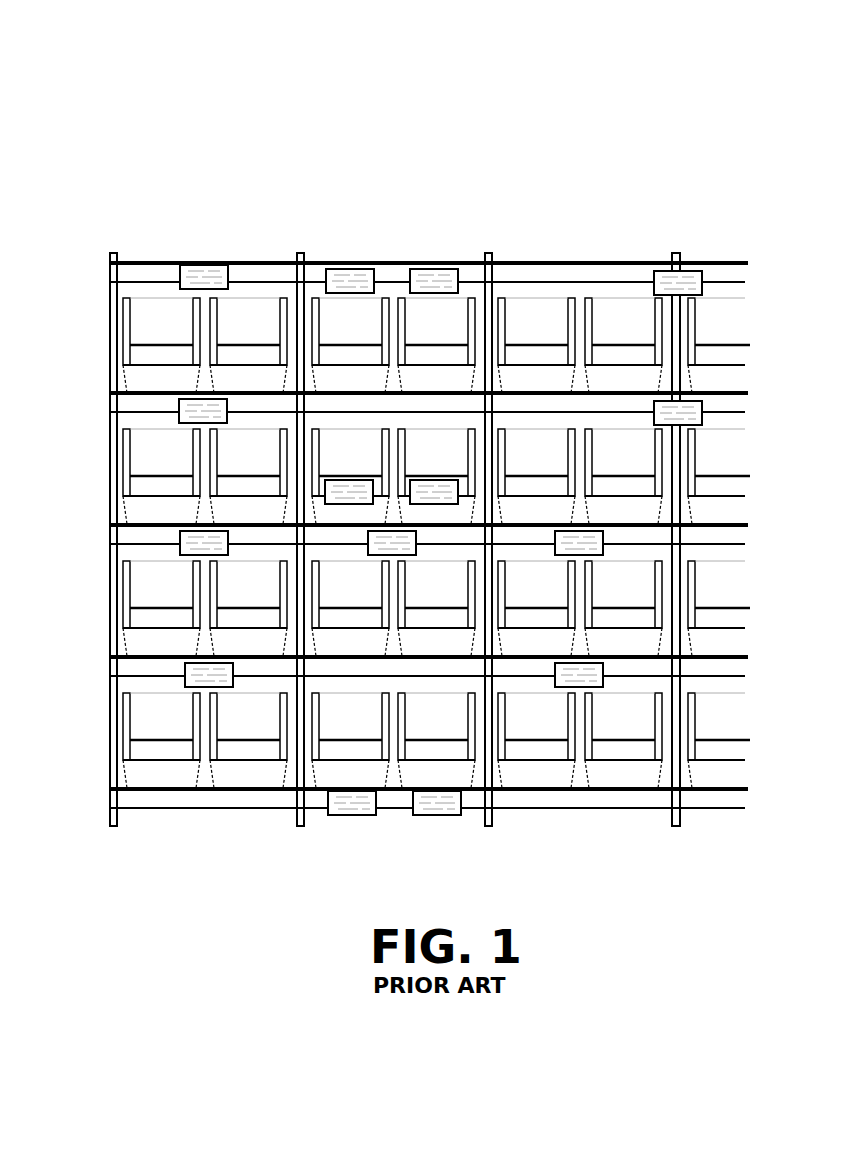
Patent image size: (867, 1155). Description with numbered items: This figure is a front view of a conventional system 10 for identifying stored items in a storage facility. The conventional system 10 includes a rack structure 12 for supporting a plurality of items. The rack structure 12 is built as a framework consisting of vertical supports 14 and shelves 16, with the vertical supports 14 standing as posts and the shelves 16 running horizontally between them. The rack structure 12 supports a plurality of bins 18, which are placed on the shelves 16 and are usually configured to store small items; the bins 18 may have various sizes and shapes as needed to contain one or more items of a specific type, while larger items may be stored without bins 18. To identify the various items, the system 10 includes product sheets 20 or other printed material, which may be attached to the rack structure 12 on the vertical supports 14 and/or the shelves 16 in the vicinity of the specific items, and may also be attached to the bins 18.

The conventional system 10 is at (289, 117).
The rack structure 12 is at (392, 256).
The vertical supports 14 is at (300, 253).
The shelves 16 is at (120, 798).
The bins 18 is at (542, 620).
The product sheets 20 is at (430, 815).